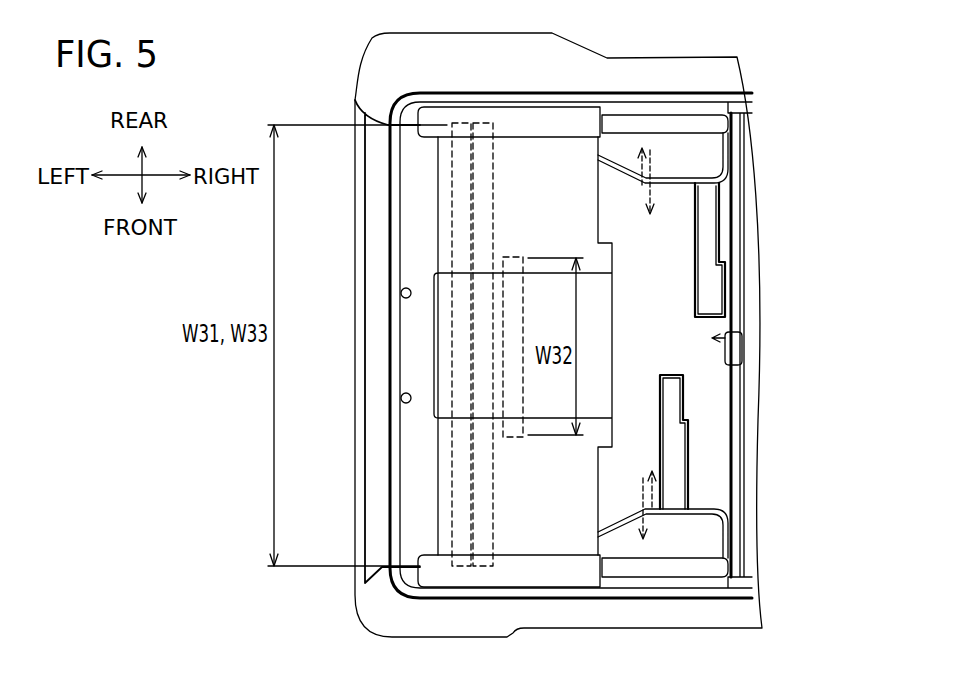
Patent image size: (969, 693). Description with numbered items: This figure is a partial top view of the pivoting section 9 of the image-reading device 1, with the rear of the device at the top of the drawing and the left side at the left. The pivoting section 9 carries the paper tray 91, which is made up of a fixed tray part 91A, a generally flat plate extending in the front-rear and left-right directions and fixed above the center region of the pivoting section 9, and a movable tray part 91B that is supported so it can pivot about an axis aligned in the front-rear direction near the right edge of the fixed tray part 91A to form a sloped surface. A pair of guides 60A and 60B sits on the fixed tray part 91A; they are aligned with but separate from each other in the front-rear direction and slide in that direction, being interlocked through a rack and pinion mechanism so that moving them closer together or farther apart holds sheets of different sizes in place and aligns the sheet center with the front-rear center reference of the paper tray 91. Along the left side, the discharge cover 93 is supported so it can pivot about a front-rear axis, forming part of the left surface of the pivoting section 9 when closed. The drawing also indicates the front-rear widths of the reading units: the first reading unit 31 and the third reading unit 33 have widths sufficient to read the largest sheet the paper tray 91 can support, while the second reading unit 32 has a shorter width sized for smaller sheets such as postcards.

The image-reading device 1 is at (560, 321).
The pivoting section 9 is at (340, 112).
The first reading unit 31 is at (483, 523).
The second reading unit 32 is at (515, 422).
The third reading unit 33 is at (463, 527).
The guide 60A is at (670, 568).
The guide 60B is at (668, 125).
The paper tray 91 is at (728, 338).
The fixed tray part 91A is at (707, 402).
The movable tray part 91B is at (755, 272).
The discharge cover 93 is at (353, 352).